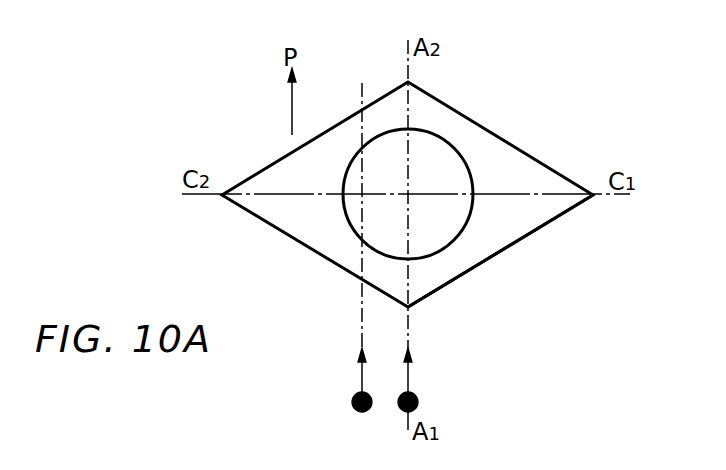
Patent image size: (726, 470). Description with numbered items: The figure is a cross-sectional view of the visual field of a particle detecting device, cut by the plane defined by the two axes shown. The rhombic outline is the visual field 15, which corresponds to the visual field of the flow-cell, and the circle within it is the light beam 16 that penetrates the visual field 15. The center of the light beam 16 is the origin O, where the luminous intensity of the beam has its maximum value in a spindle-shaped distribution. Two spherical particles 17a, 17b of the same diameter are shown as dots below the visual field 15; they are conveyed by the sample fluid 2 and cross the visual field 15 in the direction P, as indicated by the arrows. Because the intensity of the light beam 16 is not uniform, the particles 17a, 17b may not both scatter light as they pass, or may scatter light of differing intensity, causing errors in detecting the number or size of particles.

The sample fluid 2 is at (477, 295).
The visual field 15 is at (524, 237).
The light beam 16 is at (348, 221).
The origin O is at (410, 192).
The spherical particle 17a is at (416, 396).
The spherical particle 17b is at (354, 394).